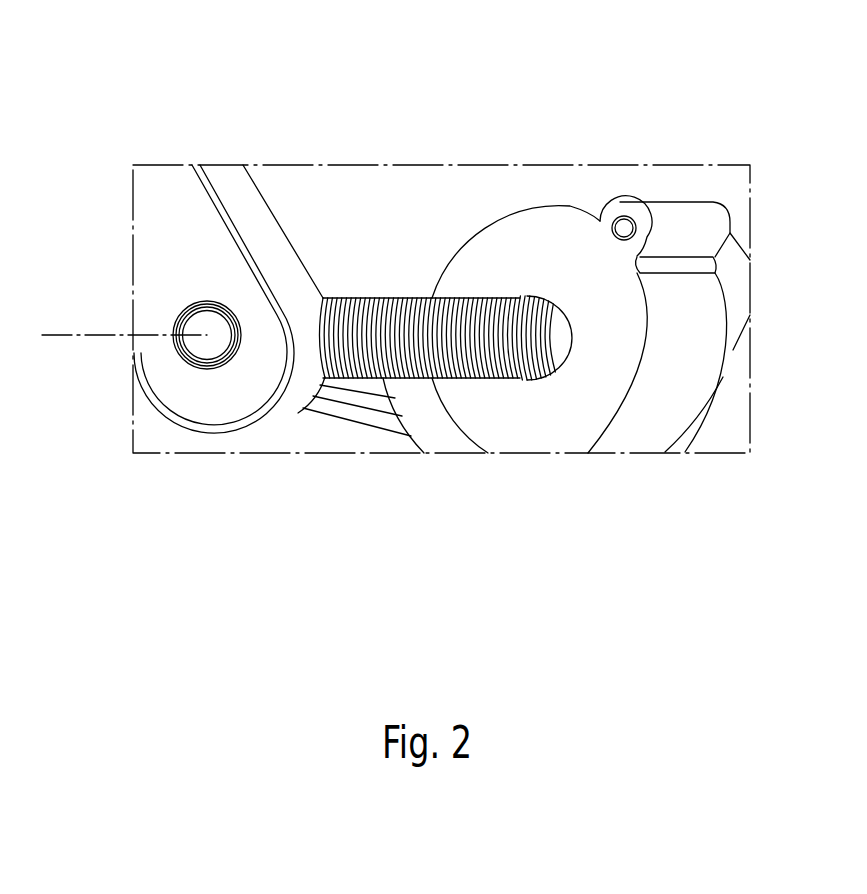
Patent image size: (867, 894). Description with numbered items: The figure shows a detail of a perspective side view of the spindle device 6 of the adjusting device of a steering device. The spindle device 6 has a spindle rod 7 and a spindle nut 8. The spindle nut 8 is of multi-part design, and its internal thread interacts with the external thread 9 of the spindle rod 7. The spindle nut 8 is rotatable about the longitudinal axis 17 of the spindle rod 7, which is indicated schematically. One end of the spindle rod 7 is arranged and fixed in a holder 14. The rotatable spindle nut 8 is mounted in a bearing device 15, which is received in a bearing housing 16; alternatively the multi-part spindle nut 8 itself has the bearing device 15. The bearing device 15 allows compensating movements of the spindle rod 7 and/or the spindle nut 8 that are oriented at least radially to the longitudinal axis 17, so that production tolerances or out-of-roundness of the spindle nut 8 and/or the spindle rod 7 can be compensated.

The spindle device 6 is at (540, 123).
The spindle rod 7 is at (502, 347).
The spindle nut 8 is at (487, 232).
The external thread 9 is at (422, 338).
The holder 14 is at (205, 392).
The bearing device 15 is at (552, 282).
The bearing housing 16 is at (638, 432).
The longitudinal axis 17 is at (95, 335).